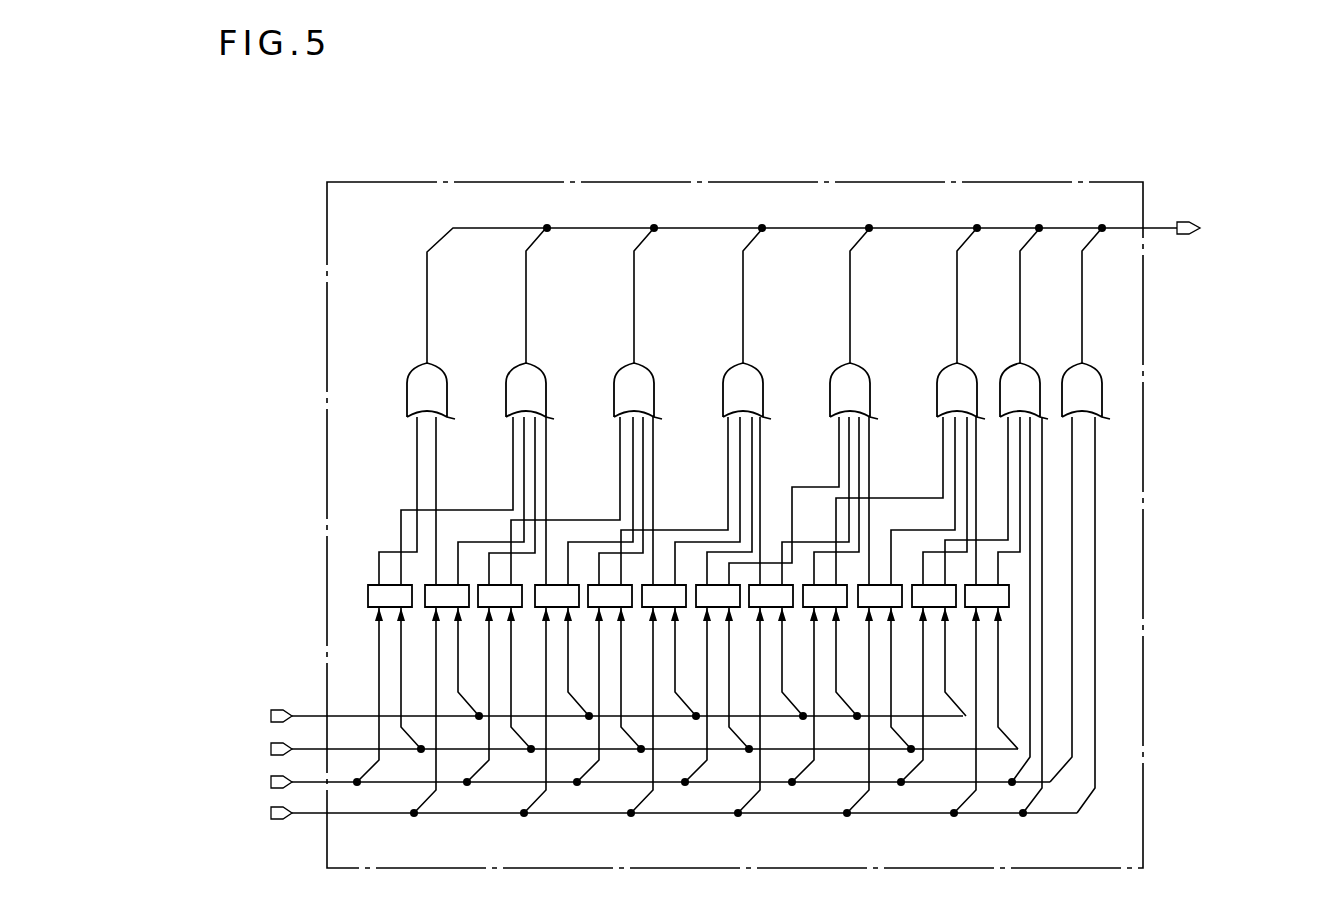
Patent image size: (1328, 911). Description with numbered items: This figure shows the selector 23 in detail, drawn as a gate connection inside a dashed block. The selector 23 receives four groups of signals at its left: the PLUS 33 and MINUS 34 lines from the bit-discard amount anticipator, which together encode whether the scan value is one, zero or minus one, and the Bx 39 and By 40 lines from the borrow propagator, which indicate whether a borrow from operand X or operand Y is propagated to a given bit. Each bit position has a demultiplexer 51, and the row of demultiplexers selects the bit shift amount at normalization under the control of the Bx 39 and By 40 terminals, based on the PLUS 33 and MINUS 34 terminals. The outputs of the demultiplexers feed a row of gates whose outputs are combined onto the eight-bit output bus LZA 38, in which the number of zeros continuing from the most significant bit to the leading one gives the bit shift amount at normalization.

The selector 23 is at (906, 182).
The LZA(7:0) 38 is at (1237, 210).
The Bx 39 is at (125, 735).
The By 40 is at (156, 702).
The PLUS 33 is at (103, 765).
The MINUS 34 is at (128, 826).
The demultiplexer 51 is at (1009, 597).